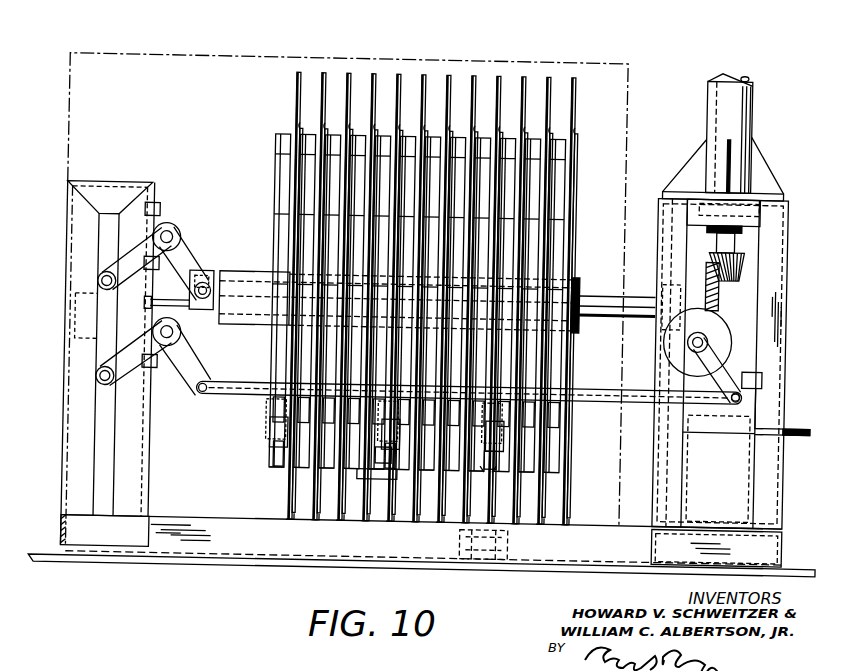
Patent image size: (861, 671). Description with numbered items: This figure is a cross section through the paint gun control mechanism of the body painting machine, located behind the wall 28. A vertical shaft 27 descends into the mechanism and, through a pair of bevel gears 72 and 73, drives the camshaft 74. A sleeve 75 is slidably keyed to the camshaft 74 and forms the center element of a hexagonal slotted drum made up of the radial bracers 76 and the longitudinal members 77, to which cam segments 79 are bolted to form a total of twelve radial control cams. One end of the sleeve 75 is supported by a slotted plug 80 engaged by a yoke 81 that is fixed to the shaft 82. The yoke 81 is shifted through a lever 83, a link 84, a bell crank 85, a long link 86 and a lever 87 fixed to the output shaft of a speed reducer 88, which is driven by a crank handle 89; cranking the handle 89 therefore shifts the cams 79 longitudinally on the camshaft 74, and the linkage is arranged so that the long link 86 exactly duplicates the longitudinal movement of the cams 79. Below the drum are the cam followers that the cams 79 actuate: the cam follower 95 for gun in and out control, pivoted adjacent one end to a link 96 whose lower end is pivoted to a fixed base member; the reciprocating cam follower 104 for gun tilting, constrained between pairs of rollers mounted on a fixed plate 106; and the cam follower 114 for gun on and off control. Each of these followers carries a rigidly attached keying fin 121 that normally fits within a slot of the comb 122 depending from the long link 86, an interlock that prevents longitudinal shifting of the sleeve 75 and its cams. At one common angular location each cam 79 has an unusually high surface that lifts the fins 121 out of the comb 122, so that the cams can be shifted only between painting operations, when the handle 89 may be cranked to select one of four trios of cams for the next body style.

The vertical shaft 27 is at (742, 76).
The wall 28 is at (586, 64).
The bevel gear 72 is at (751, 264).
The bevel gear 73 is at (720, 290).
The camshaft 74 is at (612, 296).
The sleeve 75 is at (269, 275).
The radial bracers 76 is at (272, 173).
The longitudinal members 77 is at (276, 223).
The cam segments 79 is at (288, 106).
The slotted plug 80 is at (211, 276).
The yoke 81 is at (199, 260).
The shaft 82 is at (180, 230).
The lever 83 is at (143, 251).
The link 84 is at (101, 357).
The bell crank 85 is at (201, 370).
The long link 86 is at (234, 398).
The lever 87 is at (711, 362).
The speed reducer 88 is at (728, 334).
The crank handle 89 is at (810, 420).
The cam follower 95 is at (483, 469).
The link 96 is at (504, 509).
The reciprocating cam follower 104 is at (368, 476).
The fixed plate 106 is at (368, 481).
The cam follower 114 is at (273, 458).
The keying fins 121 is at (272, 443).
The comb 122 is at (267, 423).